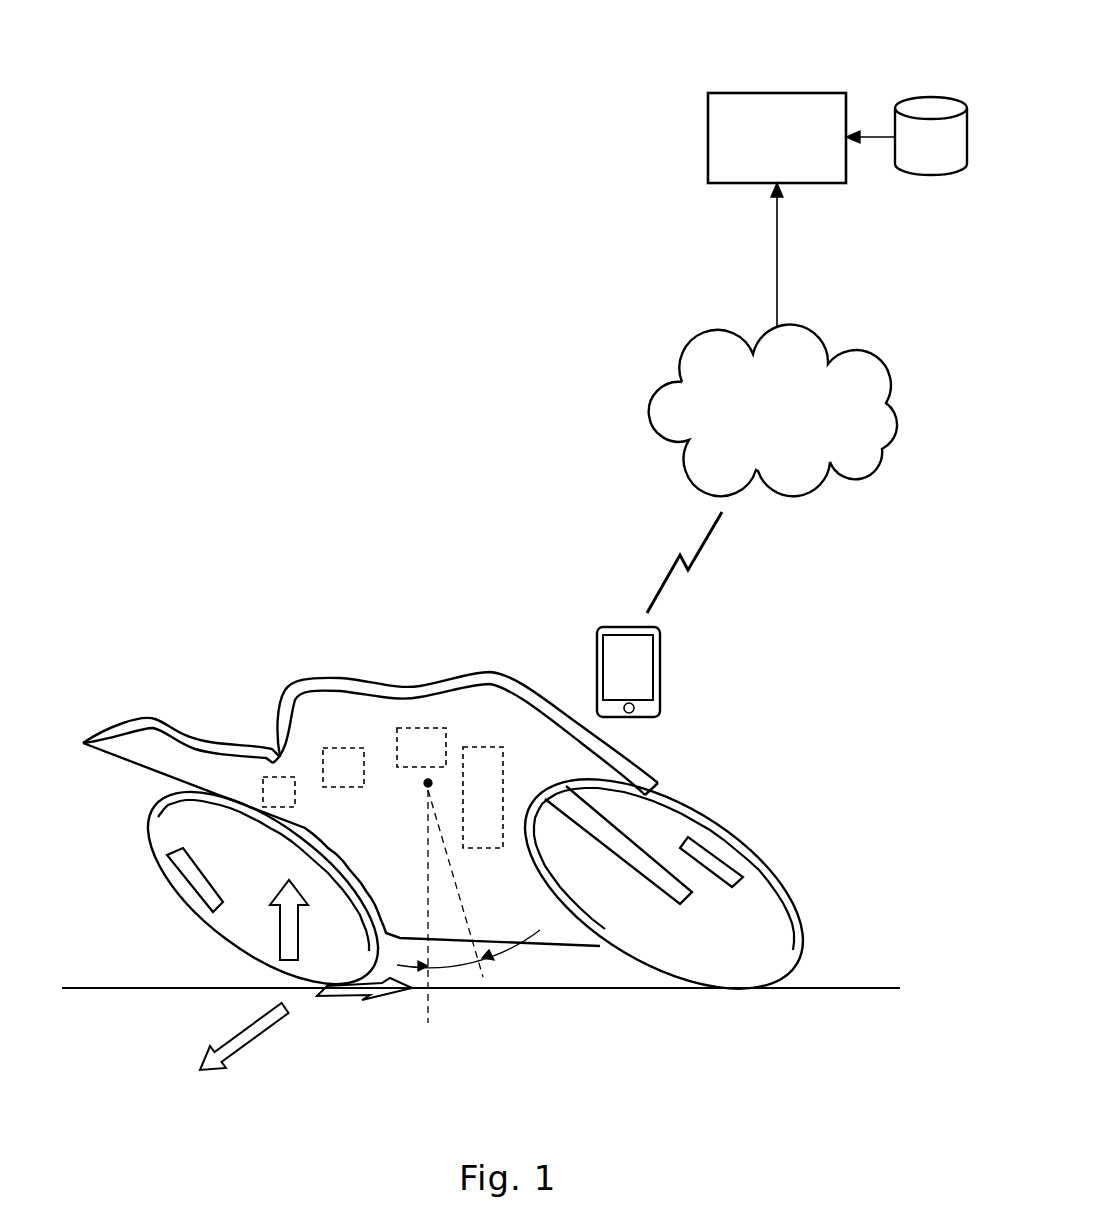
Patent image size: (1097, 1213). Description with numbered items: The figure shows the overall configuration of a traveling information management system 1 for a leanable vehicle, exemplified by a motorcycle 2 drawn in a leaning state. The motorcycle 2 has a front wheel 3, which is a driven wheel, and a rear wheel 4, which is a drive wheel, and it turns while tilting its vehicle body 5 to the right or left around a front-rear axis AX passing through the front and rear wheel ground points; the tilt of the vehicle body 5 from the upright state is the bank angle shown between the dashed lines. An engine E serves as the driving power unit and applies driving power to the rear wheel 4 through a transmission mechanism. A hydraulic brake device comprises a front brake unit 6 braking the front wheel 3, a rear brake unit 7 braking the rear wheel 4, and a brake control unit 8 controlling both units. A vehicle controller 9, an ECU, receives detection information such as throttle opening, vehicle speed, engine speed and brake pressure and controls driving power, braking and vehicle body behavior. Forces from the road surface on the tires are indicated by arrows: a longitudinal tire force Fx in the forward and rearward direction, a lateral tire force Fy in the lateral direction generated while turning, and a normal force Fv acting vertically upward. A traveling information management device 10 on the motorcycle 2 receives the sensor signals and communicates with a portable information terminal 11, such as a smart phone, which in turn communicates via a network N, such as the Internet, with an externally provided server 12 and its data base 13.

The traveling information management system 1 is at (540, 356).
The motorcycle 2 is at (575, 622).
The front wheel 3 is at (755, 850).
The rear wheel 4 is at (147, 830).
The vehicle body 5 is at (397, 680).
The front brake unit 6 is at (713, 855).
The rear brake unit 7 is at (185, 870).
The brake control unit 8 is at (266, 757).
The vehicle controller 9 is at (422, 728).
The traveling information management device 10 is at (340, 748).
The portable information terminal 11 is at (663, 660).
The server 12 is at (810, 93).
The data base 13 is at (929, 97).
The engine E is at (478, 747).
The network N is at (867, 474).
The front-rear axis AX is at (830, 992).
The normal force Fv is at (304, 920).
The longitudinal tire force Fx is at (366, 1005).
The lateral tire force Fy is at (244, 1052).